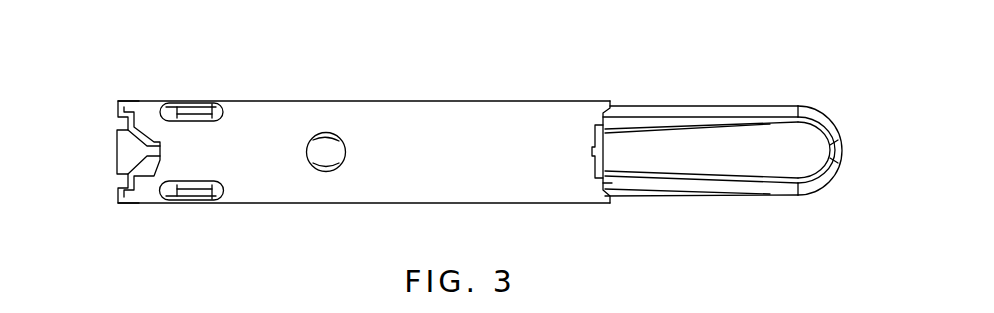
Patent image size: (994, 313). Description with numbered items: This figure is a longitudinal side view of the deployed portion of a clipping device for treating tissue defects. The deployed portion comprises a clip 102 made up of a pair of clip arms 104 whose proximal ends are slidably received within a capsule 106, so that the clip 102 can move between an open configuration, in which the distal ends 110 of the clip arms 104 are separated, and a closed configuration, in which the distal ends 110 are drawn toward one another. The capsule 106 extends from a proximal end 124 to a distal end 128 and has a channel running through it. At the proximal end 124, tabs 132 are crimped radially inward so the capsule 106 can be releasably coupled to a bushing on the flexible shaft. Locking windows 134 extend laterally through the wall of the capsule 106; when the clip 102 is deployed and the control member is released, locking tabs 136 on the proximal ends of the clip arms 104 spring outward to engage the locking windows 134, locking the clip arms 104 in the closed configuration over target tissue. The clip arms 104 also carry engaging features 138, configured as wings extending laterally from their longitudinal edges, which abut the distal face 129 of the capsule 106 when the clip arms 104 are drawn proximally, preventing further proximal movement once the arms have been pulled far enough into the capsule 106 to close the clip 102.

The clip 102 is at (330, 66).
The clip arms 104 is at (760, 112).
The capsule 106 is at (435, 122).
The distal ends 110 is at (838, 173).
The proximal end 124 is at (140, 114).
The distal end 128 is at (563, 122).
The distal face 129 is at (612, 186).
The tabs 132 is at (137, 147).
The locking windows 134 is at (174, 113).
The locking tabs 136 is at (197, 113).
The engaging features 138 is at (627, 121).